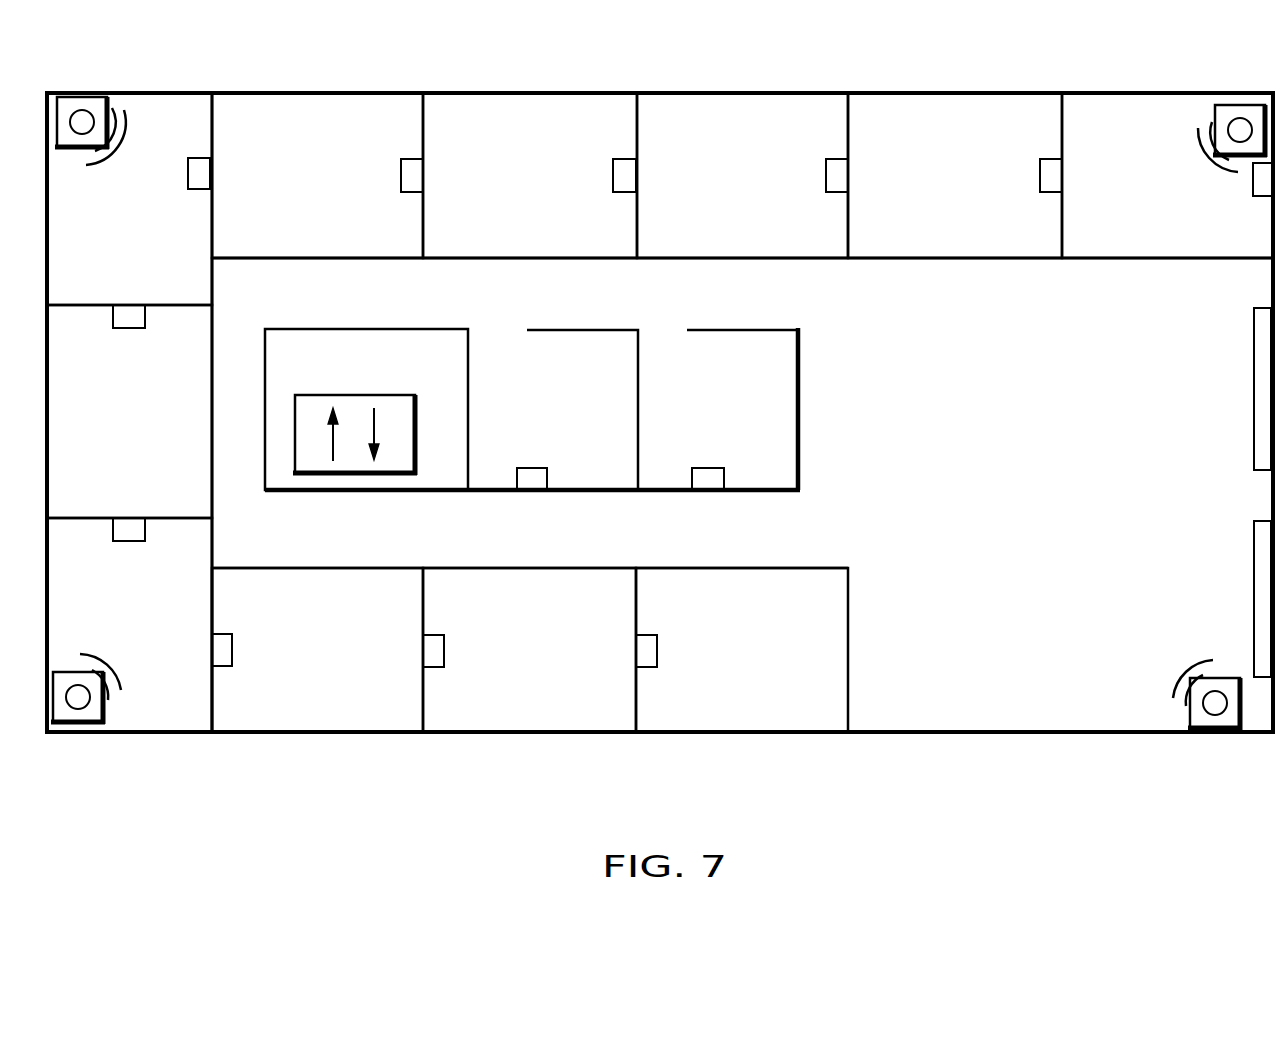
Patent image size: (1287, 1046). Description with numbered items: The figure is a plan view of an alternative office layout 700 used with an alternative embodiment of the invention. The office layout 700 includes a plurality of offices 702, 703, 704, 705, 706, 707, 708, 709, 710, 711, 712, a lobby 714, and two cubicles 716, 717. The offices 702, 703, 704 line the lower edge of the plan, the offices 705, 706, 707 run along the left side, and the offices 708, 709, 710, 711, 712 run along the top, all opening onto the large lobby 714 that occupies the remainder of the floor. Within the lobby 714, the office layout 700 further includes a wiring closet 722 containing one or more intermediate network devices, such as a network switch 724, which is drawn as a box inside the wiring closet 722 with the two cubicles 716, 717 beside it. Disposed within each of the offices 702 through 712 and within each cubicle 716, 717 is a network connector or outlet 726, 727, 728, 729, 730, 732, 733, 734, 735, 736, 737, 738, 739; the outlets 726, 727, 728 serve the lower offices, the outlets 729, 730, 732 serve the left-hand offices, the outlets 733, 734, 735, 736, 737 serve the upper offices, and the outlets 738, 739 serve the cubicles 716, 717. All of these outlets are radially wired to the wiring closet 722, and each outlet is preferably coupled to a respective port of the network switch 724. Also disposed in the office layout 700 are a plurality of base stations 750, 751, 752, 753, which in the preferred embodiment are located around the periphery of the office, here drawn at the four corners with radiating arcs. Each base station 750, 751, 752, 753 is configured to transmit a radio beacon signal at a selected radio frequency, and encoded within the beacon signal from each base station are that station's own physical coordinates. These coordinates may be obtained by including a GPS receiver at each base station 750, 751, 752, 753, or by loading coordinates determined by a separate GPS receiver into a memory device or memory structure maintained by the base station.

The office layout 700 is at (953, 68).
The office 702 is at (764, 664).
The office 703 is at (552, 664).
The office 704 is at (339, 664).
The office 705 is at (151, 638).
The office 706 is at (151, 423).
The office 707 is at (151, 208).
The office 708 is at (339, 194).
The office 709 is at (552, 194).
The office 710 is at (764, 194).
The office 711 is at (976, 194).
The office 712 is at (1187, 194).
The lobby 714 is at (1035, 428).
The cubicle 716 is at (574, 408).
The cubicle 717 is at (754, 408).
The wiring closet 722 is at (374, 378).
The network switch 724 is at (417, 453).
The network connector or outlet 726 is at (655, 634).
The network connector or outlet 727 is at (442, 634).
The network connector or outlet 728 is at (232, 634).
The network connector or outlet 729 is at (145, 520).
The network connector or outlet 730 is at (145, 307).
The network connector or outlet 732 is at (200, 190).
The network connector or outlet 733 is at (405, 158).
The network connector or outlet 734 is at (618, 158).
The network connector or outlet 735 is at (831, 158).
The network connector or outlet 736 is at (1045, 158).
The network connector or outlet 737 is at (1262, 197).
The network connector or outlet 738 is at (548, 472).
The network connector or outlet 739 is at (726, 472).
The base station 750 is at (1191, 720).
The base station 751 is at (104, 716).
The base station 752 is at (122, 68).
The base station 753 is at (1216, 112).